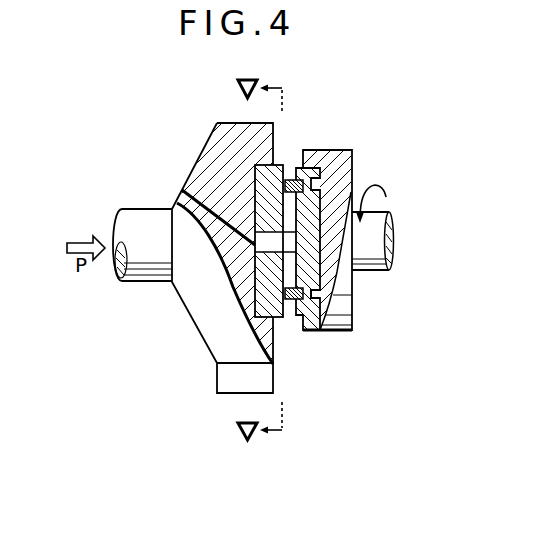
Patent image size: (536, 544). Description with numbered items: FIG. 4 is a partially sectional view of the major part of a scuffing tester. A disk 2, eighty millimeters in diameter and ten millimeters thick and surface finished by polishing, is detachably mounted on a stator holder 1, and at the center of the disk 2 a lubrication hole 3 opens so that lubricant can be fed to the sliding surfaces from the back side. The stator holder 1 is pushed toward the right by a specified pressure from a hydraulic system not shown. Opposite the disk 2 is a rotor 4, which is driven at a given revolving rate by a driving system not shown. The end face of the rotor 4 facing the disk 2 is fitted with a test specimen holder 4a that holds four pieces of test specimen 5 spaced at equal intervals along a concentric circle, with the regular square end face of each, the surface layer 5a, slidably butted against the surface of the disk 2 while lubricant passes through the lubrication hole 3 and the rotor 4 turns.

The stator holder 1 is at (203, 177).
The disk 2 is at (282, 176).
The lubrication hole 3 is at (188, 190).
The rotor 4 is at (332, 160).
The test specimen holder 4a is at (297, 305).
The test specimen 5 is at (289, 177).
The surface layer 5a is at (284, 183).